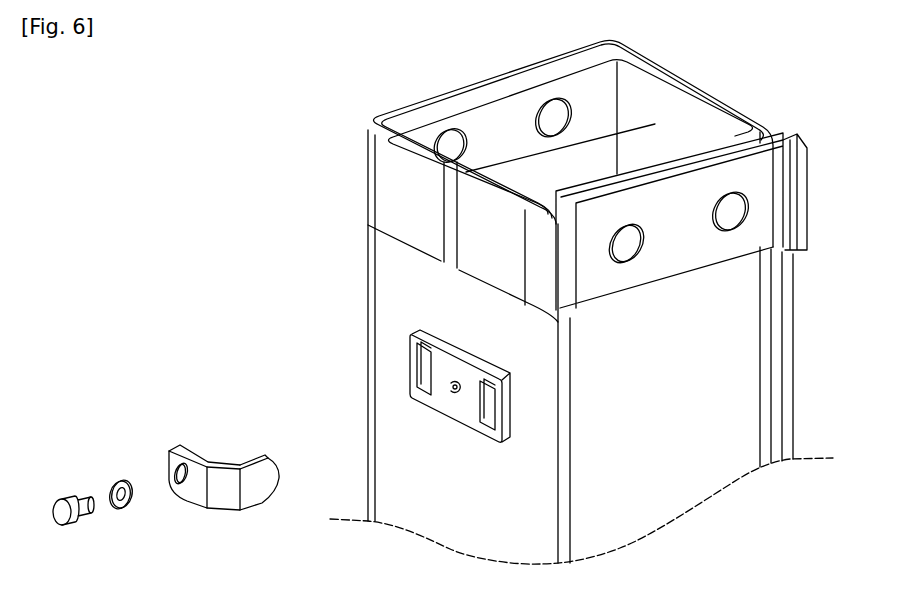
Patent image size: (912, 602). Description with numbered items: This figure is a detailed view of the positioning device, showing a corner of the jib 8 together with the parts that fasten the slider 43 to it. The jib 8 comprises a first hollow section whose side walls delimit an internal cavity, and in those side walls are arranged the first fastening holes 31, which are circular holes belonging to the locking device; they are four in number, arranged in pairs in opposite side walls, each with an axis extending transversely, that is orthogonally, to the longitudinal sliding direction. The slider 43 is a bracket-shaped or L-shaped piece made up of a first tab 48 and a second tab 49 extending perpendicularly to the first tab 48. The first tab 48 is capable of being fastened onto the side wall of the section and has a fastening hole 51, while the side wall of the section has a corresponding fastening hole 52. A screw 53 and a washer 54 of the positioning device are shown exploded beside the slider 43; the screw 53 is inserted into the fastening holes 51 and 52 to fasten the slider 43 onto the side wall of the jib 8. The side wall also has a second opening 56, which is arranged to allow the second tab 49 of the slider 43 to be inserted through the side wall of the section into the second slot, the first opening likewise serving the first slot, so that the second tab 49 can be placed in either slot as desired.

The jib 8 is at (579, 302).
The first fastening holes 31 is at (467, 155).
The slider 43 is at (213, 508).
The first tab 48 is at (174, 483).
The second tab 49 is at (257, 485).
The fastening hole 51 is at (174, 474).
The fastening hole 52 is at (448, 391).
The screw 53 is at (70, 497).
The washer 54 is at (121, 511).
The second opening 56 is at (478, 404).